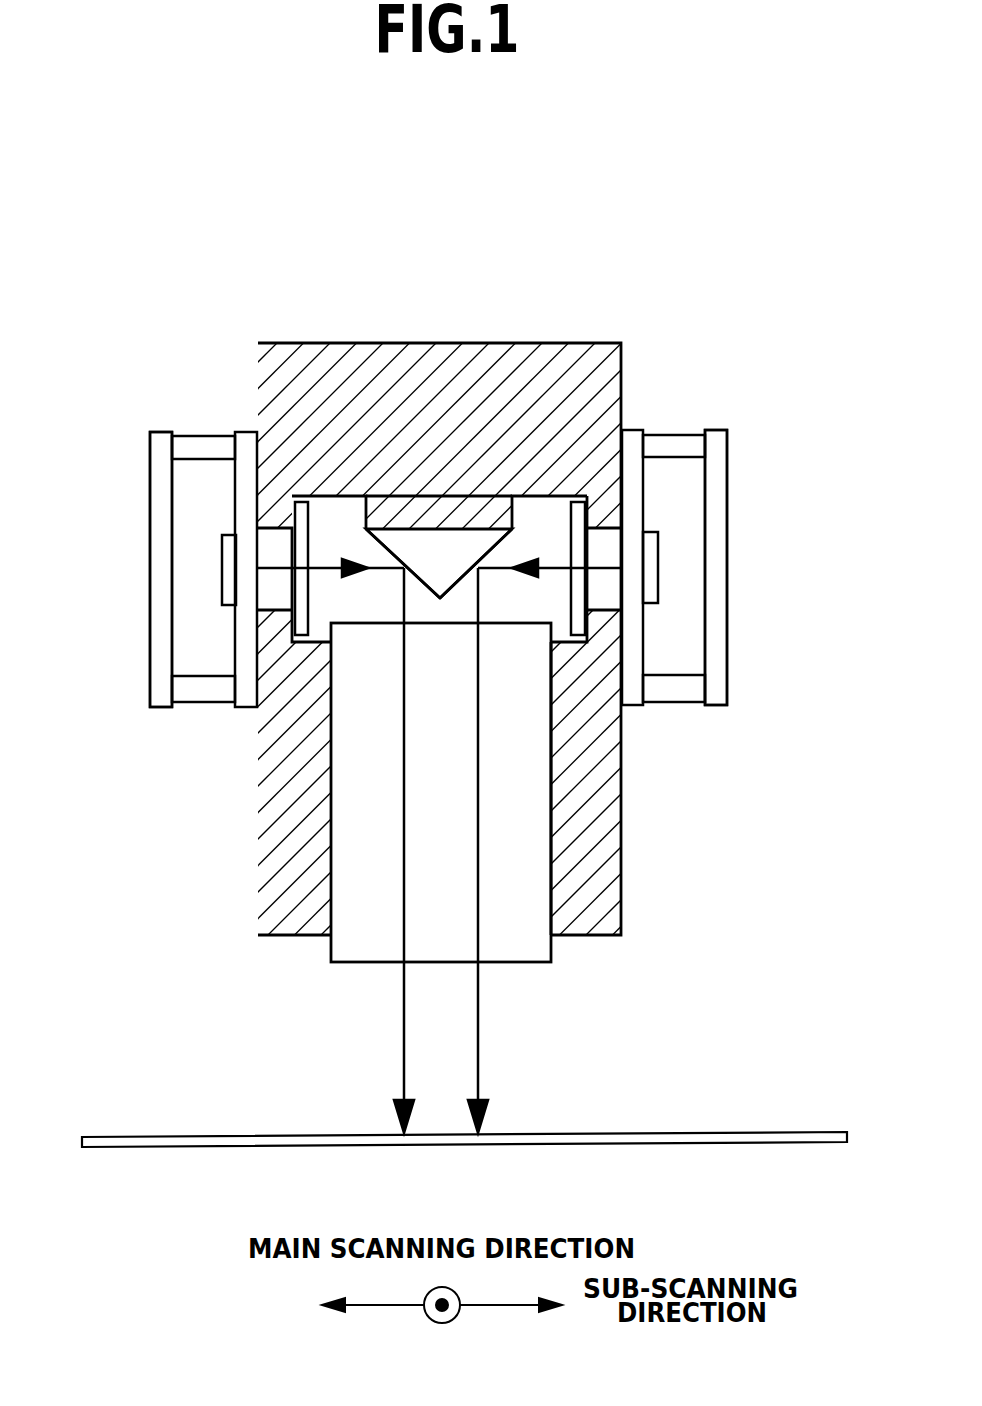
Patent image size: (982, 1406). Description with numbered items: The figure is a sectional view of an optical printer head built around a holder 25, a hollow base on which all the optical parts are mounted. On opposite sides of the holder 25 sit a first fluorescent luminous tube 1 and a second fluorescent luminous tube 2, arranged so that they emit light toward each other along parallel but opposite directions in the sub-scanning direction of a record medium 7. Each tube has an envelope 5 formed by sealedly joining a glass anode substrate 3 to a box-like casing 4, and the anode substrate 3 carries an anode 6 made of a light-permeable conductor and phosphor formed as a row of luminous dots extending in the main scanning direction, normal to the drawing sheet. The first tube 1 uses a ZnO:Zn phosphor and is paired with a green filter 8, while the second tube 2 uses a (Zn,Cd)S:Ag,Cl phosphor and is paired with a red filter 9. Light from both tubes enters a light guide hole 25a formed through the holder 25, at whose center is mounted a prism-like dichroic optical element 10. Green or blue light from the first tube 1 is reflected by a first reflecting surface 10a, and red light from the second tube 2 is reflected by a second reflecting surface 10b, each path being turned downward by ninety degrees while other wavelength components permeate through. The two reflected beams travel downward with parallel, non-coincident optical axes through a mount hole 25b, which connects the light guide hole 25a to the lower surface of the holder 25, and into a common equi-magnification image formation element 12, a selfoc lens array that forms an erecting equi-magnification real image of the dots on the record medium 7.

The first fluorescent luminous tube 1 is at (152, 500).
The second fluorescent luminous tube 2 is at (716, 502).
The anode substrate 3 is at (242, 433).
The box-like casing 4 is at (162, 433).
The envelope 5 is at (195, 338).
The anode 6 is at (223, 566).
The record medium 7 is at (712, 1132).
The filter 8 is at (297, 600).
The red filter 9 is at (582, 586).
The optical element 10 is at (433, 545).
The first reflecting surface 10a is at (392, 548).
The second reflecting surface 10b is at (490, 550).
The equi-magnification image formation element 12 is at (517, 837).
The holder 25 is at (588, 341).
The light guide hole 25a is at (545, 518).
The mount hole 25b is at (553, 772).